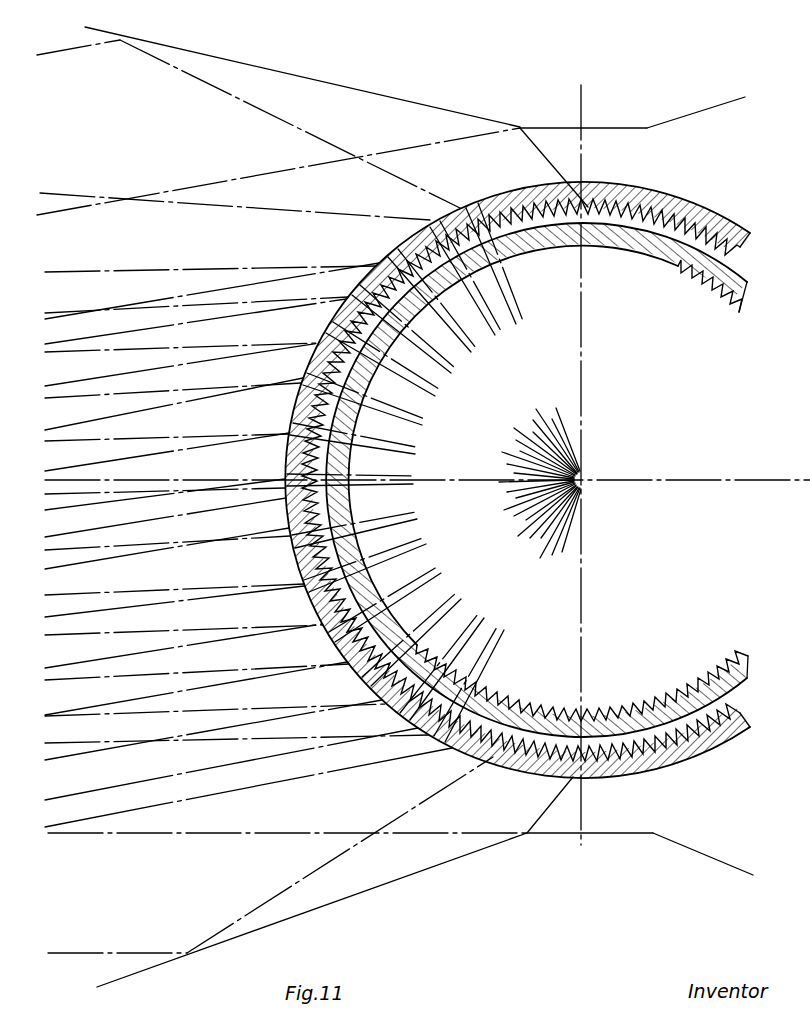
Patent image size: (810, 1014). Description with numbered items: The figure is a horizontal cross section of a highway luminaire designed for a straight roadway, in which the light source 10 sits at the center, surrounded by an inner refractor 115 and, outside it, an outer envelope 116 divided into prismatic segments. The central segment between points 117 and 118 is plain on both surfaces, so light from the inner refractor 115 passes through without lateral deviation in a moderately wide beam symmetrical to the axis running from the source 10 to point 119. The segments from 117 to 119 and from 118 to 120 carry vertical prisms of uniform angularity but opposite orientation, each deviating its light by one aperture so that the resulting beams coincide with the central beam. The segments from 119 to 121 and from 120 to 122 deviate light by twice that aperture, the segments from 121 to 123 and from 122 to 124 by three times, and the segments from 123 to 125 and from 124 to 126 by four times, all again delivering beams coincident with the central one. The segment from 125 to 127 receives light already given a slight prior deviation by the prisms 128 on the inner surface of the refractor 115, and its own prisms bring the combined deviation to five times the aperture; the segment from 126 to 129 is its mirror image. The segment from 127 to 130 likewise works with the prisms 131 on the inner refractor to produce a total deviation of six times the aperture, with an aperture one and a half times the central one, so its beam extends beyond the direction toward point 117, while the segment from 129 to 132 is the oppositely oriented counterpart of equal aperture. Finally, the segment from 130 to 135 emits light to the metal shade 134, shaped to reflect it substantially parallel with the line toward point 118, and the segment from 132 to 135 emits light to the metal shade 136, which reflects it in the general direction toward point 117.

The light source 10 is at (592, 477).
The inner refractor 115 is at (629, 247).
The outer envelope 116 is at (672, 196).
The segment boundary point 117 is at (287, 478).
The segment boundary point 118 is at (300, 542).
The segment boundary point 119 is at (303, 432).
The segment boundary point 120 is at (310, 587).
The segment boundary point 121 is at (322, 382).
The segment boundary point 122 is at (330, 640).
The segment boundary point 123 is at (345, 334).
The segment boundary point 124 is at (355, 690).
The segment boundary point 125 is at (362, 292).
The segment boundary point 126 is at (398, 722).
The segment boundary point 127 is at (400, 258).
The prisms on inner surface of refractor 128 is at (416, 312).
The segment boundary point 129 is at (432, 748).
The segment boundary point 130 is at (458, 211).
The prisms on inner surface of inner refractor 131 is at (468, 287).
The segment boundary point 132 is at (470, 772).
The metal shade 134 is at (403, 97).
The segment boundary point 135 is at (590, 183).
The metal shade 136 is at (406, 880).